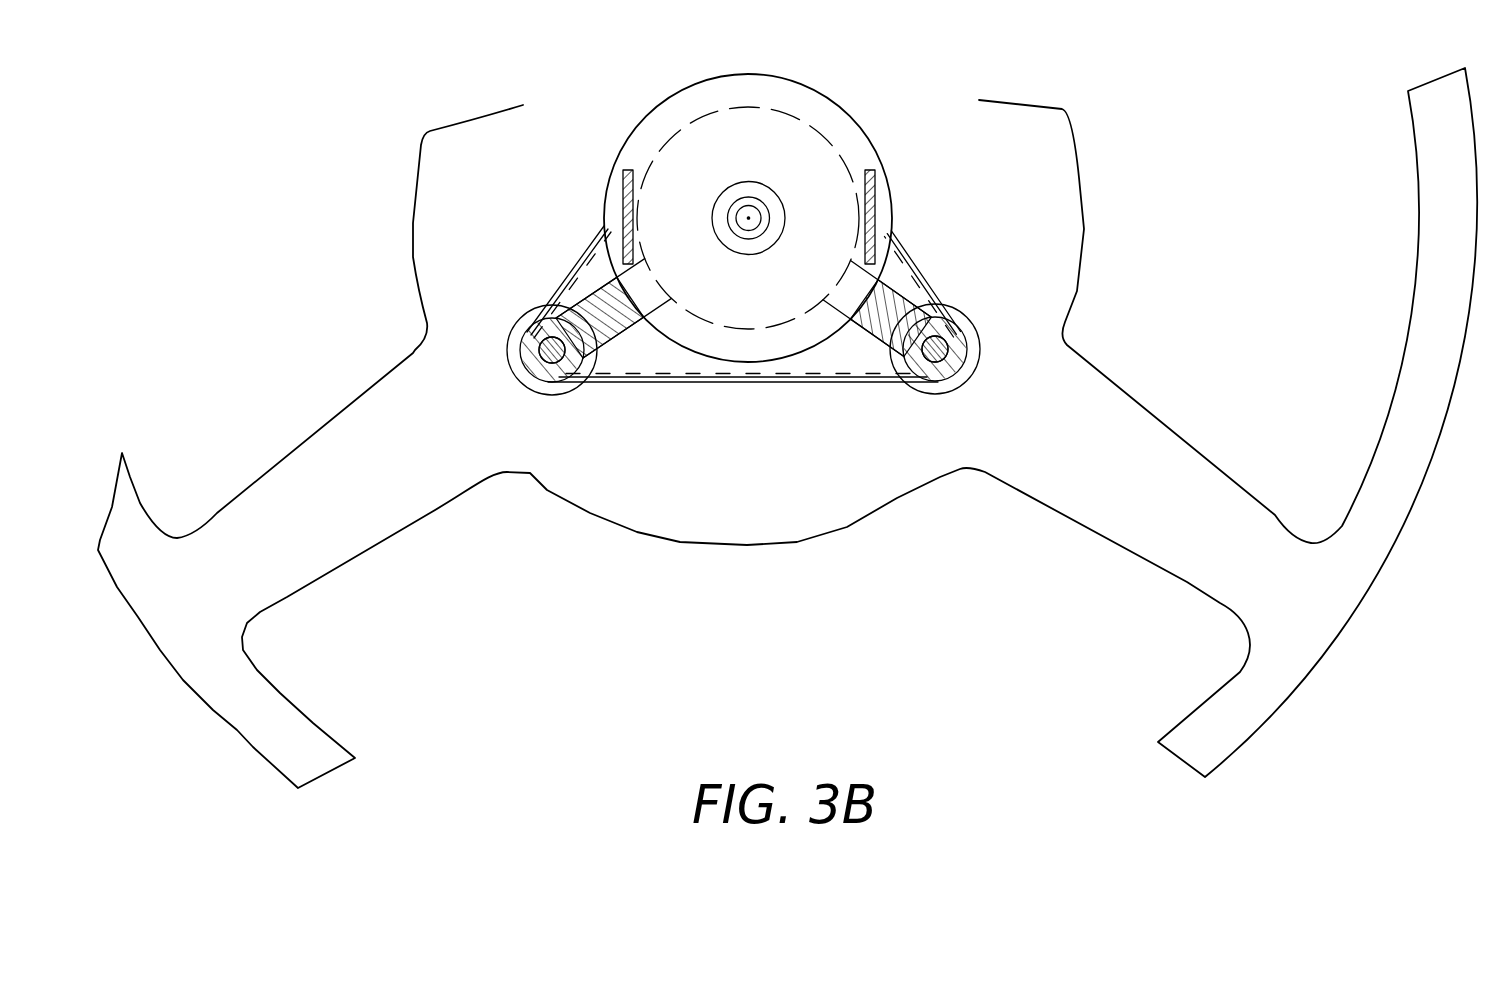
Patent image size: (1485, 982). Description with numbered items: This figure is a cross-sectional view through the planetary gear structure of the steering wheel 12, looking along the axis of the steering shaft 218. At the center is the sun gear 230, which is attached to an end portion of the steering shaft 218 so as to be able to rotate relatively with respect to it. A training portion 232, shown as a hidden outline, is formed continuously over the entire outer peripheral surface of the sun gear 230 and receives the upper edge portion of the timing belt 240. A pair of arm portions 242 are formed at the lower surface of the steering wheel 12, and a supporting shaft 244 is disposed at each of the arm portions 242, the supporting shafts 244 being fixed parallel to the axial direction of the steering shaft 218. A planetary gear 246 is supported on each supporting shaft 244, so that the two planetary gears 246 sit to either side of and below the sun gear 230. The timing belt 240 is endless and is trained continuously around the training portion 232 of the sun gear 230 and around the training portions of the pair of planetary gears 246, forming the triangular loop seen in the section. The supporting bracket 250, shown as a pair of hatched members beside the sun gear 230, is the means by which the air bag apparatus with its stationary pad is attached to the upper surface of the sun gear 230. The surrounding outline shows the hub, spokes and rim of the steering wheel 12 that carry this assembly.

The steering wheel 12 is at (252, 752).
The steering shaft 218 is at (748, 213).
The sun gear 230 is at (857, 124).
The training portion 232 is at (768, 108).
The timing belt 240 is at (722, 383).
The arm portions 242 is at (620, 327).
The supporting shaft 244 is at (556, 362).
The planetary gear 246 is at (535, 361).
The supporting bracket 250 is at (622, 187).